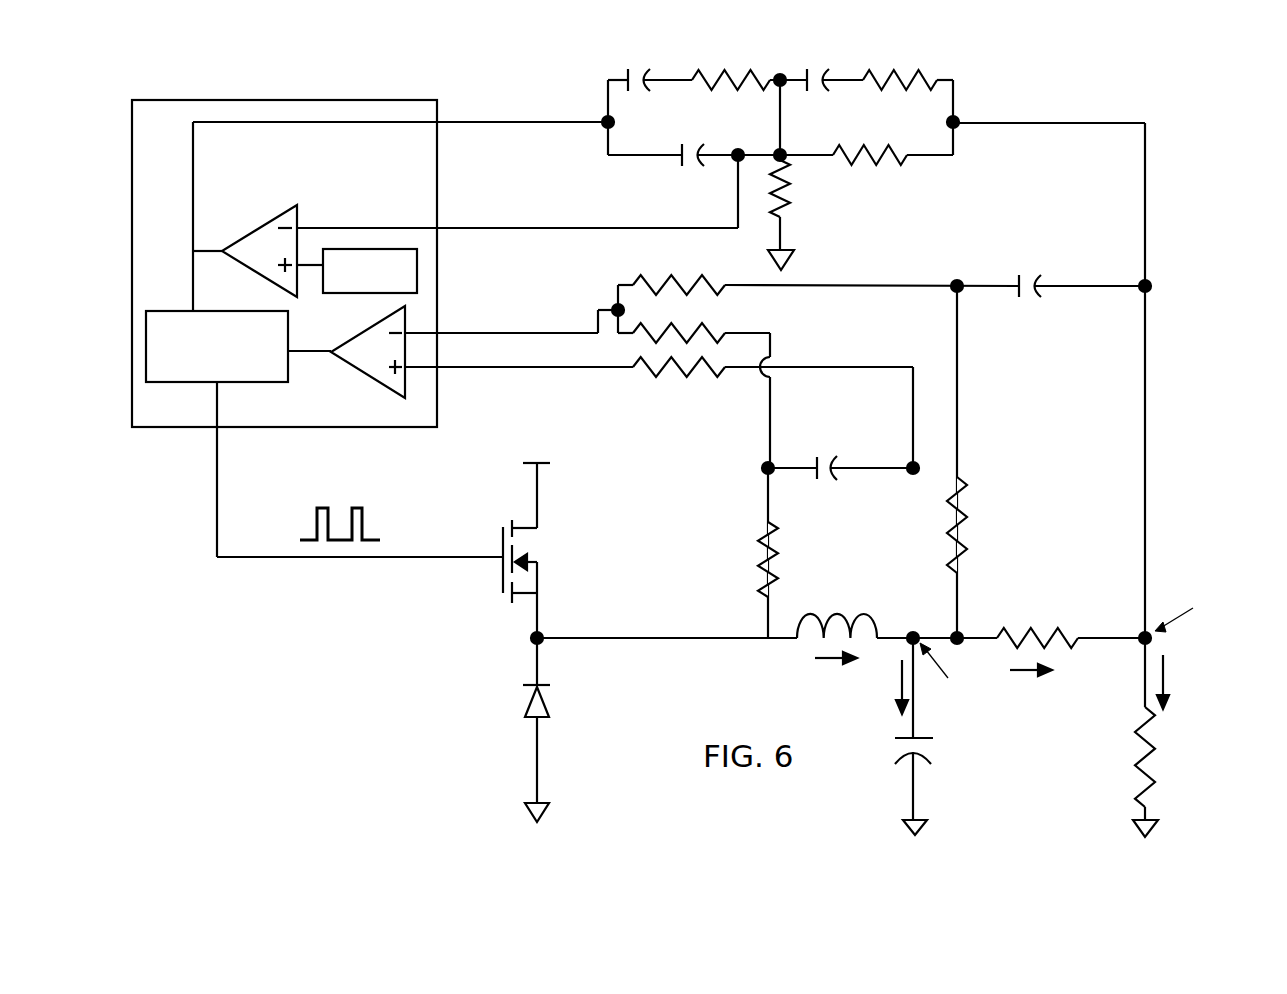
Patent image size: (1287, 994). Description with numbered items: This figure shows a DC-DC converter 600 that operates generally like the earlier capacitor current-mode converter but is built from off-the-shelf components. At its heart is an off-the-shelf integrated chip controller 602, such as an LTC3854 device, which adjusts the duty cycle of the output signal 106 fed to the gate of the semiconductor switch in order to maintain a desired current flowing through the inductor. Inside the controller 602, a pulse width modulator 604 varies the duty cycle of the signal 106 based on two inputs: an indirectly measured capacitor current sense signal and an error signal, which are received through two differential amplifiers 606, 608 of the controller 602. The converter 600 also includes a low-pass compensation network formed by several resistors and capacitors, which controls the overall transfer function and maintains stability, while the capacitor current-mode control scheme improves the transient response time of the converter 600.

The DC-DC converter 600 is at (1243, 83).
The off-the-shelf integrated chip controller 602 is at (440, 103).
The pulse width modulator 604 is at (180, 383).
The differential amplifier 606 is at (407, 323).
The differential amplifier 608 is at (300, 213).
The signal 106 is at (364, 510).